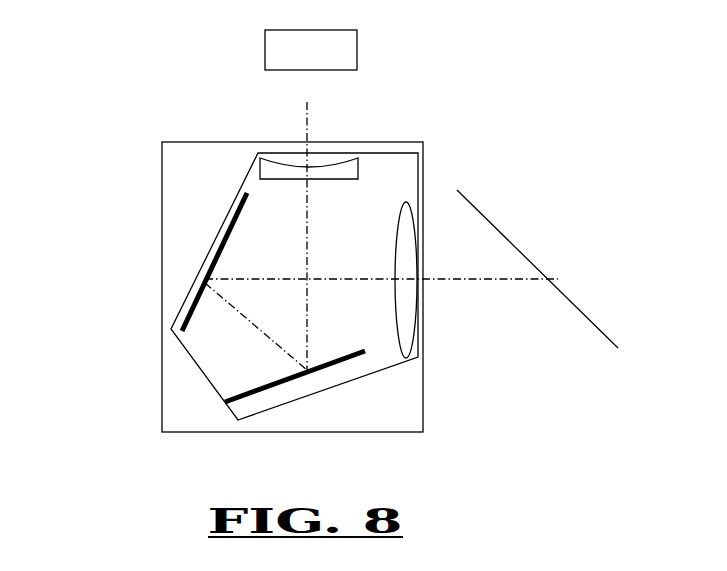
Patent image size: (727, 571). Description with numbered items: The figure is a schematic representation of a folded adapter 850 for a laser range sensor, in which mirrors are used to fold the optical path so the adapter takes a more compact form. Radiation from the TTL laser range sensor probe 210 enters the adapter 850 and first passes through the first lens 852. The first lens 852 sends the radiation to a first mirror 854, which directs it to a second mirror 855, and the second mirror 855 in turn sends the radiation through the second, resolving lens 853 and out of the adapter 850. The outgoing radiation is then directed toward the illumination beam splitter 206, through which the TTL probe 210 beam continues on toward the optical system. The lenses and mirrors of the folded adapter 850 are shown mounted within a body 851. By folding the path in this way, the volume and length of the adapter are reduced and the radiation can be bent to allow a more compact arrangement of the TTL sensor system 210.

The illumination beam splitter 206 is at (508, 239).
The TTL laser range sensor probe 210 is at (293, 62).
The folded adapter 850 is at (172, 422).
The prism 851 is at (393, 167).
The first lens 852 is at (282, 163).
The second resolving lens 853 is at (408, 302).
The first mirror 854 is at (262, 385).
The second mirror 855 is at (212, 256).